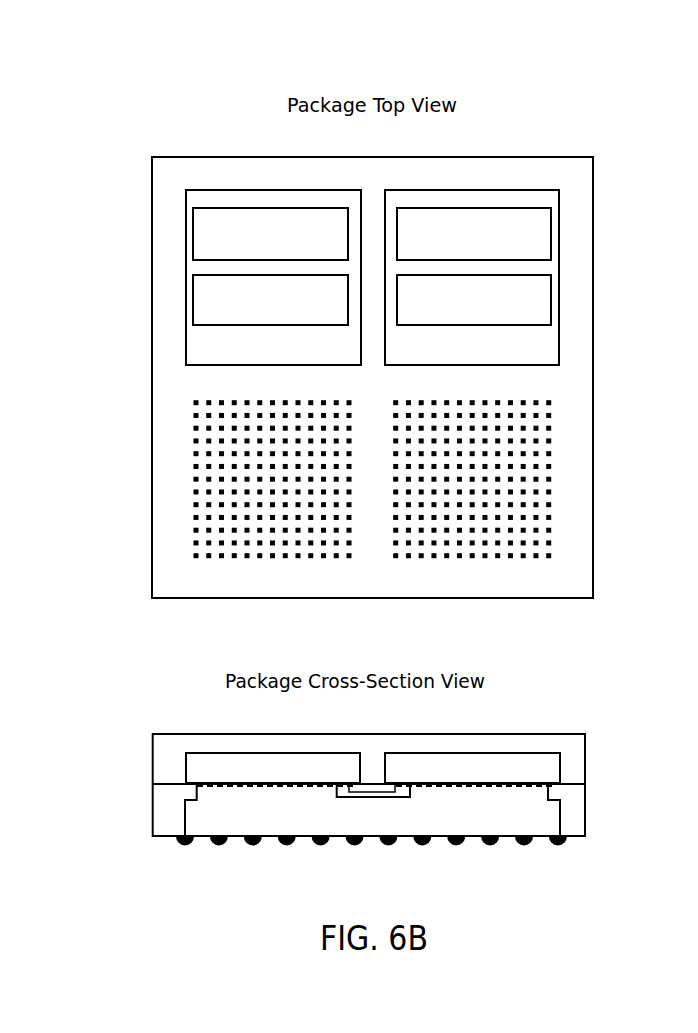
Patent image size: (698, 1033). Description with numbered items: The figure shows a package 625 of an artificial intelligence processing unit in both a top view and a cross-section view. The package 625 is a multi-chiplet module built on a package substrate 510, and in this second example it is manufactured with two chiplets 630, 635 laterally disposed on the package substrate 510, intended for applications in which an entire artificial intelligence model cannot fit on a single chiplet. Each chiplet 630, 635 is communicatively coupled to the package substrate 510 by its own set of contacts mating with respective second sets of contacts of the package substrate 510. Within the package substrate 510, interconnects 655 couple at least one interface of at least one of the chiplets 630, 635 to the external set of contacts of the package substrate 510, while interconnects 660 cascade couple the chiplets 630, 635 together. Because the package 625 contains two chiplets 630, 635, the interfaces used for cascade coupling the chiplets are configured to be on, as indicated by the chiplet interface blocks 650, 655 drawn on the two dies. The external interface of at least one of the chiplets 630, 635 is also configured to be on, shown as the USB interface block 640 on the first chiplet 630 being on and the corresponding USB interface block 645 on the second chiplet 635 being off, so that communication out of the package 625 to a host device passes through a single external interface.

The package 625 is at (581, 48).
The package substrate 510 is at (168, 385).
The chiplet 630 is at (217, 189).
The chiplet 635 is at (525, 188).
The USB interface (on) 640 is at (193, 233).
The USB interface (off) 645 is at (553, 233).
The chiplet interface (on) 650 is at (193, 302).
The interconnects 655 is at (553, 302).
The interconnects 660 is at (362, 798).